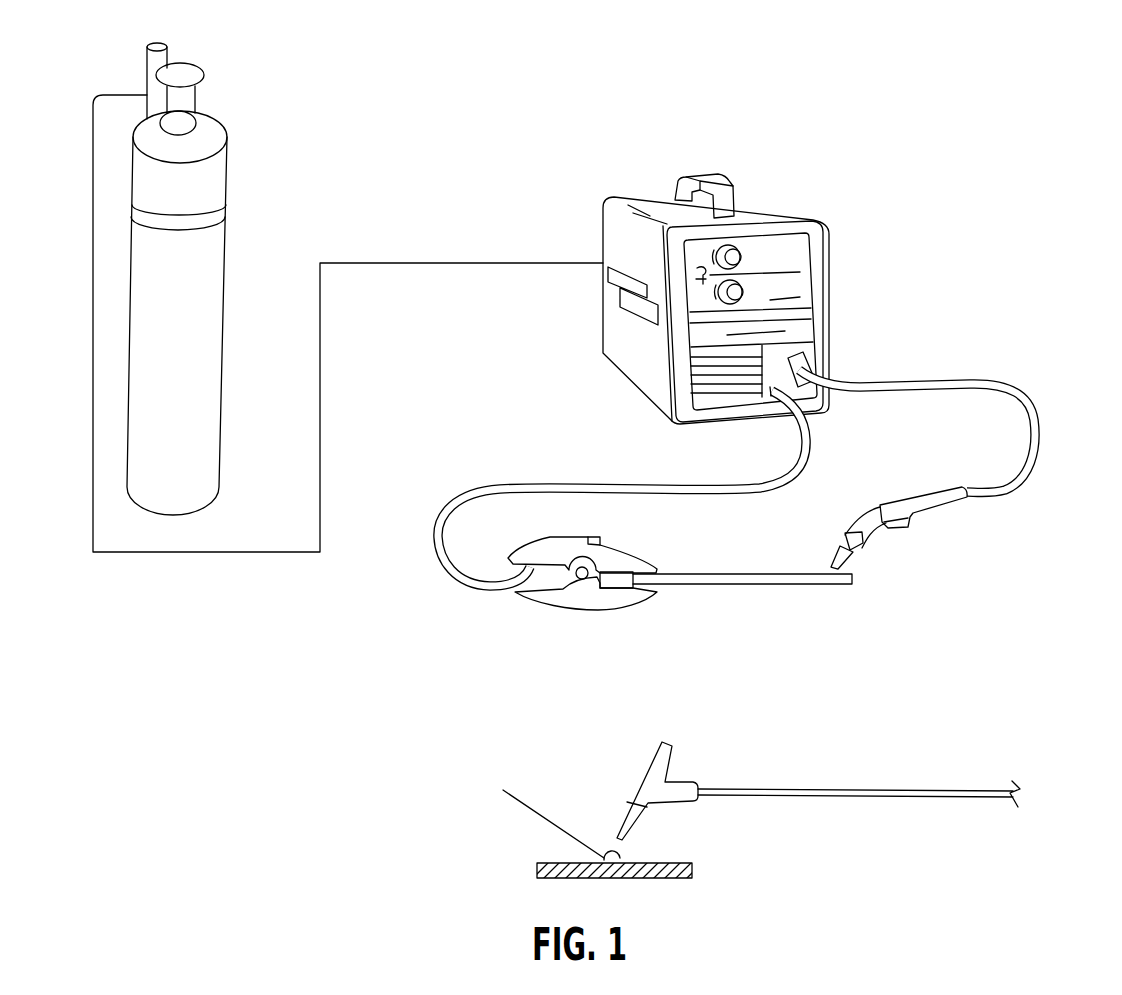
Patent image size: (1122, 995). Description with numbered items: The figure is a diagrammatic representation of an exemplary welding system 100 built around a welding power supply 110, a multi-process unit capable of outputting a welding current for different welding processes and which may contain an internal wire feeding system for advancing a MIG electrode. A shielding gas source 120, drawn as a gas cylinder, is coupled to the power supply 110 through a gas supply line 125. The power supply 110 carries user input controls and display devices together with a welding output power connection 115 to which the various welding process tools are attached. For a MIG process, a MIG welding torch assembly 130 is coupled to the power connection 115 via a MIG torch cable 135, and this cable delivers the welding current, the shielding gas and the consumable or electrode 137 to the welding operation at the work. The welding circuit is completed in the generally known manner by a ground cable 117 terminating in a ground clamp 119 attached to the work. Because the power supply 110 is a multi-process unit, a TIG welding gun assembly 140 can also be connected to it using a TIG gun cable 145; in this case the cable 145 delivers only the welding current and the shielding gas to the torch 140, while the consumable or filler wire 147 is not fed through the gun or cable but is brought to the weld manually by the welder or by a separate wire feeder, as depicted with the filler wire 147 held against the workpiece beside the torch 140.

The welding system 100 is at (827, 145).
The welding power supply 110 is at (829, 253).
The welding output power connection 115 is at (806, 352).
The ground cable 117 is at (566, 486).
The ground clamp 119 is at (618, 552).
The shielding gas source 120 is at (228, 128).
The gas supply line 125 is at (408, 263).
The MIG welding torch assembly 130 is at (942, 507).
The MIG torch cable 135 is at (1038, 425).
The consumable/electrode 137 is at (828, 569).
The TIG welding gun assembly 140 is at (668, 803).
The TIG gun cable 145 is at (862, 789).
The filler wire 147 is at (528, 812).